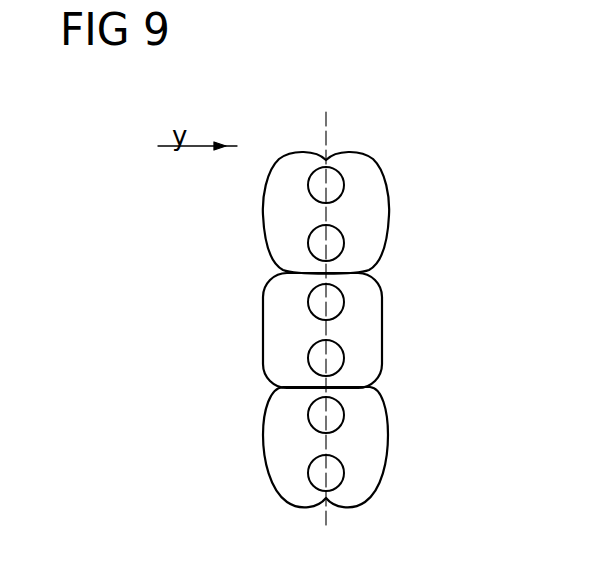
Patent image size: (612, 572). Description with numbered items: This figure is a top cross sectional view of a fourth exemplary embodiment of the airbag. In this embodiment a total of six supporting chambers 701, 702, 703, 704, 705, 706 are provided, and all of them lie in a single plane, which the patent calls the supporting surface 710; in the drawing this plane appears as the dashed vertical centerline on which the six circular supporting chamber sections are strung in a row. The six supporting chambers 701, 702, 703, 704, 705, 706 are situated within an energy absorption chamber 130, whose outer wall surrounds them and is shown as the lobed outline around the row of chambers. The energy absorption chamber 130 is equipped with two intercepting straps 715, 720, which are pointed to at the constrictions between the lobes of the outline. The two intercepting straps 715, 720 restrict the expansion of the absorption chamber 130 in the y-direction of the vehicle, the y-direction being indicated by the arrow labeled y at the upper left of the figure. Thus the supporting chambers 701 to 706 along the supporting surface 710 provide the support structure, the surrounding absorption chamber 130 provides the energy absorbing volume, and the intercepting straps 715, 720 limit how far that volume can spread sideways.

The supporting surface 710 is at (324, 140).
The supporting chamber 701 is at (338, 186).
The supporting chamber 702 is at (335, 244).
The supporting chamber 703 is at (322, 303).
The supporting chamber 704 is at (320, 360).
The supporting chamber 705 is at (312, 420).
The supporting chamber 706 is at (323, 477).
The intercepting strap 715 is at (350, 276).
The intercepting strap 720 is at (350, 386).
The energy absorption chamber 130 is at (360, 463).